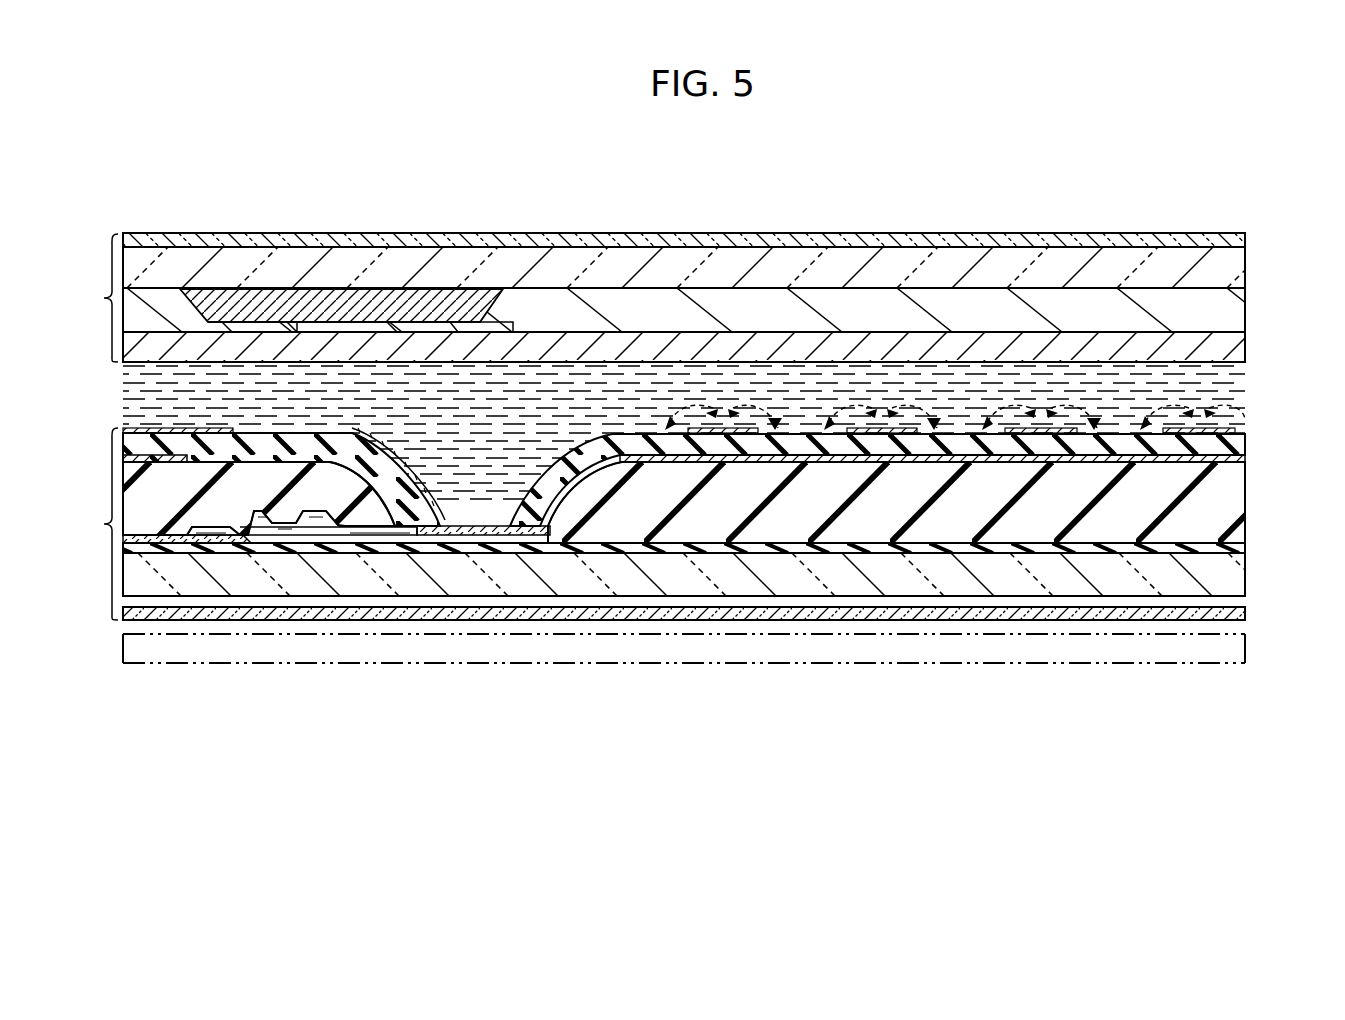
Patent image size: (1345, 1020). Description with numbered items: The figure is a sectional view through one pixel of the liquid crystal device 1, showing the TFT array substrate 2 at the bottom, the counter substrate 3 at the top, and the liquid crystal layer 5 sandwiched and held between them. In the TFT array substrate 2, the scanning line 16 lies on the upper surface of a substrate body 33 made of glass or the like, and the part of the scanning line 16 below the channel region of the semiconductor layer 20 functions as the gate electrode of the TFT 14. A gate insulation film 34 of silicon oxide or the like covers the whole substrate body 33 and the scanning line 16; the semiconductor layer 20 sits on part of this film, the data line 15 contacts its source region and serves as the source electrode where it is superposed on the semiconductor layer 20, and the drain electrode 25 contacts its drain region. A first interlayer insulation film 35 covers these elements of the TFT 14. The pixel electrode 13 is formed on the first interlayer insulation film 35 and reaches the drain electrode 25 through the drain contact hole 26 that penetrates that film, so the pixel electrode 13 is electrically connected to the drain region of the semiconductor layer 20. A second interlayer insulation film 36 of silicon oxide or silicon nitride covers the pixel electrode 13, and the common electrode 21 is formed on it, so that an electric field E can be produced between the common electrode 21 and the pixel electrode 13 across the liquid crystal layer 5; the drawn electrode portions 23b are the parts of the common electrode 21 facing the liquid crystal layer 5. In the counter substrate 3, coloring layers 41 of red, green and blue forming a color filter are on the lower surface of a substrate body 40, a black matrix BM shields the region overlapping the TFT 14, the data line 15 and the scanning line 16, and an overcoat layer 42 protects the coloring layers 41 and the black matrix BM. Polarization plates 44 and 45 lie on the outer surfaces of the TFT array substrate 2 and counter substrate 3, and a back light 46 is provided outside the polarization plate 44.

The liquid crystal device 1 is at (770, 183).
The TFT array substrate 2 is at (100, 524).
The counter substrate 3 is at (100, 298).
The liquid crystal layer 5 is at (123, 378).
The pixel electrode 13 is at (1240, 460).
The TFT 14 is at (265, 468).
The data line 15 is at (170, 545).
The scanning line 16 is at (285, 543).
The semiconductor layer 20 is at (225, 543).
The common electrode 21 is at (1235, 427).
The pixel electrode 23b is at (793, 395).
The drain electrode 25 is at (372, 540).
The drain contact hole 26 is at (527, 545).
The substrate body 33 is at (1240, 582).
The gate insulation film 34 is at (1240, 548).
The first interlayer insulation film 35 is at (1240, 505).
The second interlayer insulation film 36 is at (1240, 440).
The substrate body 40 is at (1245, 268).
The coloring layers 41 is at (1245, 305).
The overcoat layer 42 is at (1245, 343).
The polarization plate 44 is at (1240, 612).
The polarization plate 45 is at (1245, 237).
The back light 46 is at (1245, 648).
The black matrix BM is at (480, 292).
The electric field E is at (1157, 425).